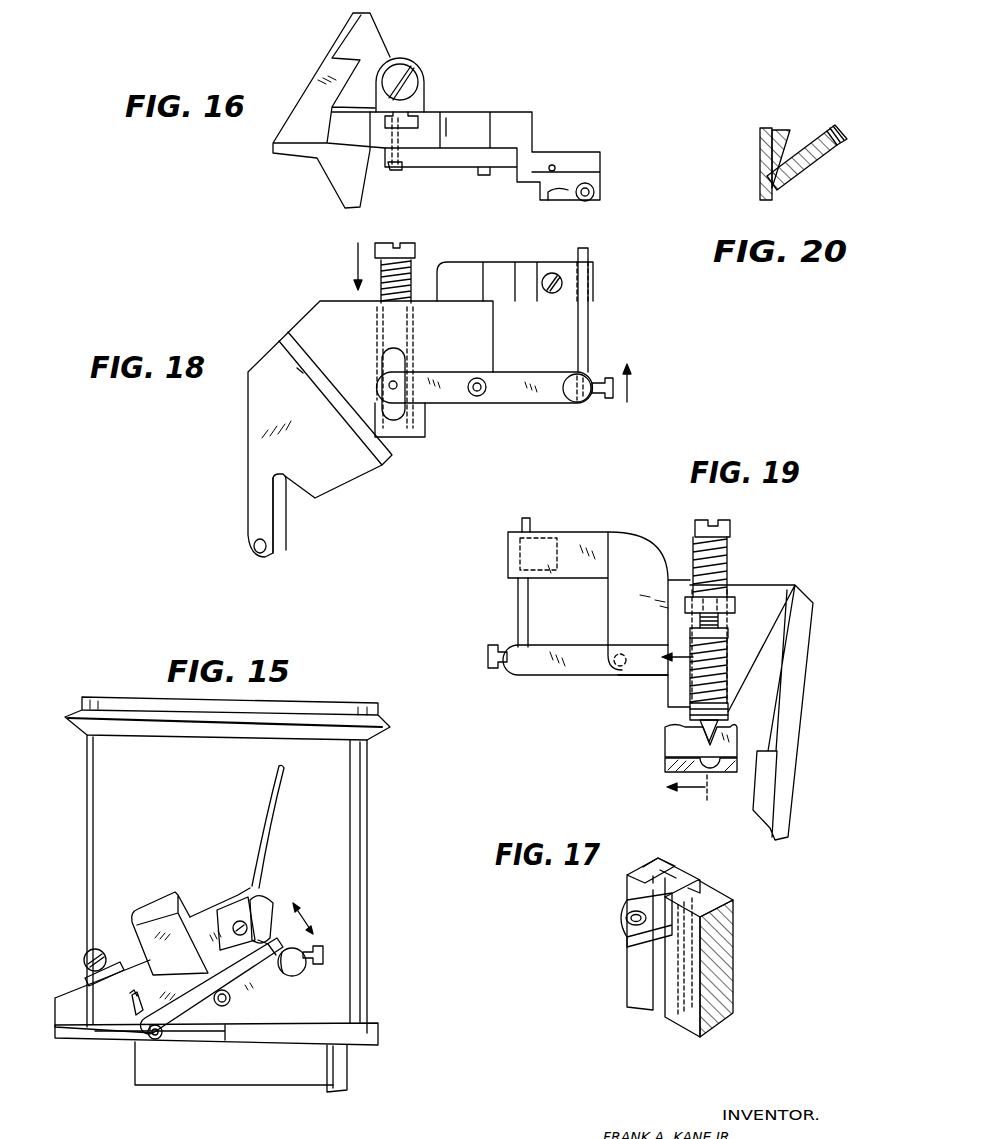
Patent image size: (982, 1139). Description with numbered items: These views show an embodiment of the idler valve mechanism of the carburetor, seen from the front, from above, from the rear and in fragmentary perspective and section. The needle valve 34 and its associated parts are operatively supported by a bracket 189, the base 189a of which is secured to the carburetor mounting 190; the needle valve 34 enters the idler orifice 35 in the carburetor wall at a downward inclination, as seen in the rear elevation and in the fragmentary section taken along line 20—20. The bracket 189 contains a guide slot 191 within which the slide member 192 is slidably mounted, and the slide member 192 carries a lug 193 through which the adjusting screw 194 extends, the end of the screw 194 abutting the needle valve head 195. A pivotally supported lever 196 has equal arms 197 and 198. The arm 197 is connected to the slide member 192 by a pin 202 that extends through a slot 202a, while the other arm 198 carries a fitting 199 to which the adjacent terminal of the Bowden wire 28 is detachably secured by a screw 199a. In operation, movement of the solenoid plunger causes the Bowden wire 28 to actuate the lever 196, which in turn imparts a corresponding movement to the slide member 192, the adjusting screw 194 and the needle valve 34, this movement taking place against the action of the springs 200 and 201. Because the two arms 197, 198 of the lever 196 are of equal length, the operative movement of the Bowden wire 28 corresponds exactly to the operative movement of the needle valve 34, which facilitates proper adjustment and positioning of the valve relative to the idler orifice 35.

In FIG. 19, the section line 20— 20 is at (665, 724).
In FIG. 16, the Bowden wire 28 is at (590, 186).
In FIG. 18, the Bowden wire 28 is at (590, 332).
In FIG. 19, the Bowden wire 28 is at (517, 615).
In FIG. 15, the Bowden wire 28 is at (256, 830).
In FIG. 20, the needle valve 34 is at (800, 176).
In FIG. 19, the needle valve 34 is at (700, 738).
In FIG. 20, the idler orifice 35 is at (760, 183).
In FIG. 19, the idler orifice 35 is at (713, 769).
In FIG. 18, the bracket 189 is at (268, 344).
In FIG. 19, the bracket 189 is at (776, 575).
In FIG. 18, the base of bracket 189a is at (282, 521).
In FIG. 15, the base of bracket 189a is at (123, 1033).
In FIG. 15, the carburetor mounting 190 is at (297, 1034).
In FIG. 16, the guide slot 191 is at (415, 129).
In FIG. 15, the guide slot 191 is at (107, 1000).
In FIG. 17, the guide slot 191 is at (700, 884).
In FIG. 16, the slide member 192 is at (412, 109).
In FIG. 18, the slide member 192 is at (396, 418).
In FIG. 15, the slide member 192 is at (122, 966).
In FIG. 17, the slide member 192 is at (672, 868).
In FIG. 16, the lug 193 is at (425, 78).
In FIG. 19, the lug 193 is at (684, 605).
In FIG. 17, the lug 193 is at (628, 940).
In FIG. 16, the adjusting screw 194 is at (394, 70).
In FIG. 18, the adjusting screw 194 is at (416, 252).
In FIG. 19, the adjusting screw 194 is at (730, 524).
In FIG. 15, the adjusting screw 194 is at (85, 958).
In FIG. 19, the needle valve head 195 is at (728, 633).
In FIG. 18, the lever 196 is at (516, 410).
In FIG. 19, the lever 196 is at (574, 663).
In FIG. 15, the lever 196 is at (270, 970).
In FIG. 18, the lever arm 197 is at (458, 396).
In FIG. 18, the lever arm 198 is at (553, 398).
In FIG. 16, the fitting 199 is at (594, 197).
In FIG. 18, the fitting 199 is at (585, 405).
In FIG. 19, the fitting 199 is at (497, 656).
In FIG. 15, the fitting 199 is at (296, 971).
In FIG. 18, the screw 199a is at (613, 396).
In FIG. 15, the screw 199a is at (320, 947).
In FIG. 19, the spring 200 is at (728, 562).
In FIG. 19, the spring 201 is at (728, 670).
In FIG. 16, the pin 202 is at (396, 171).
In FIG. 18, the pin 202 is at (396, 382).
In FIG. 18, the slot 202a is at (385, 360).